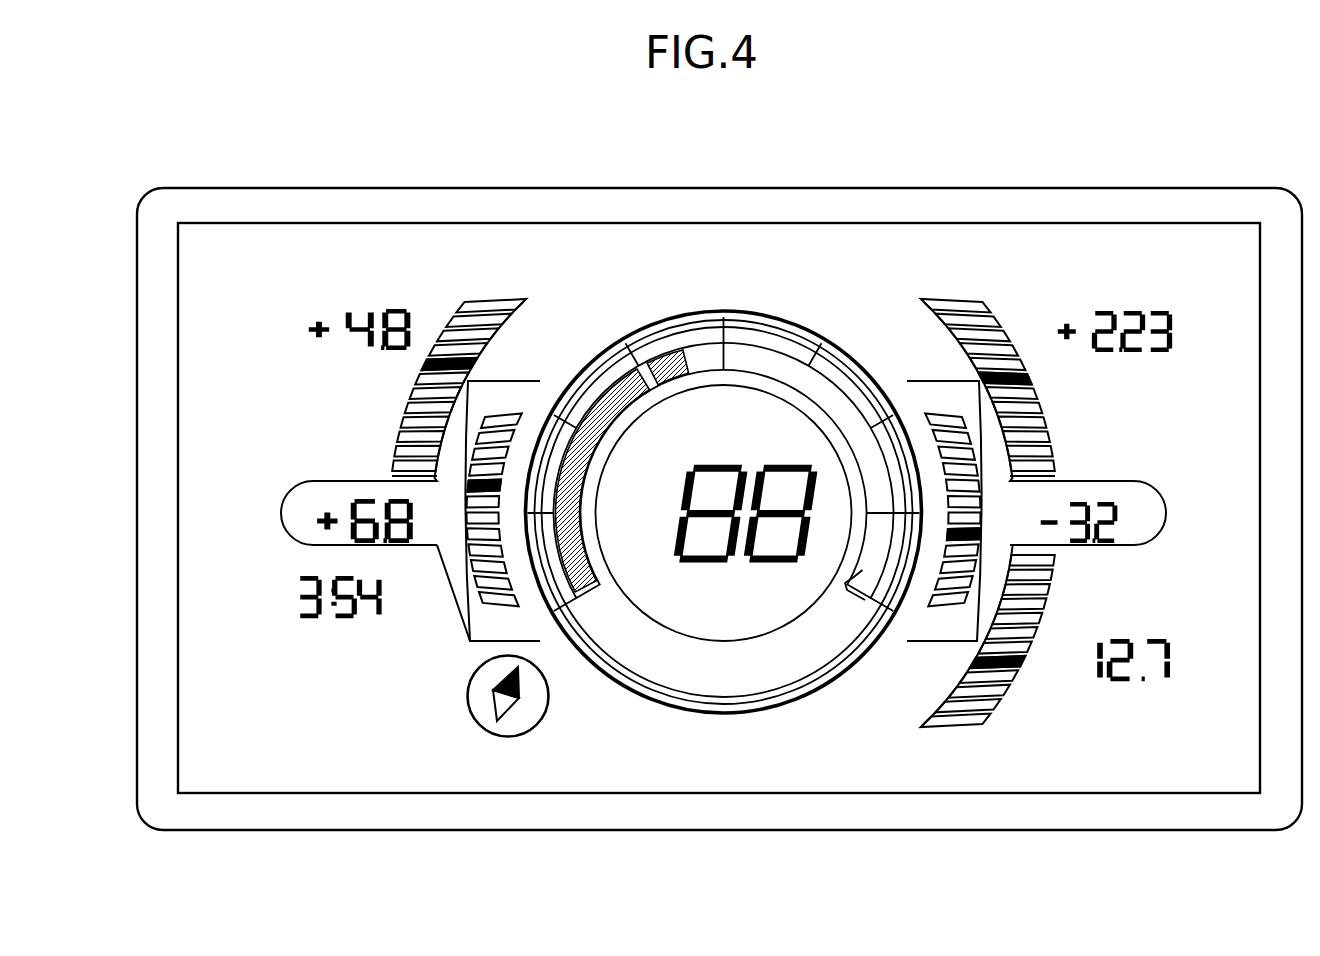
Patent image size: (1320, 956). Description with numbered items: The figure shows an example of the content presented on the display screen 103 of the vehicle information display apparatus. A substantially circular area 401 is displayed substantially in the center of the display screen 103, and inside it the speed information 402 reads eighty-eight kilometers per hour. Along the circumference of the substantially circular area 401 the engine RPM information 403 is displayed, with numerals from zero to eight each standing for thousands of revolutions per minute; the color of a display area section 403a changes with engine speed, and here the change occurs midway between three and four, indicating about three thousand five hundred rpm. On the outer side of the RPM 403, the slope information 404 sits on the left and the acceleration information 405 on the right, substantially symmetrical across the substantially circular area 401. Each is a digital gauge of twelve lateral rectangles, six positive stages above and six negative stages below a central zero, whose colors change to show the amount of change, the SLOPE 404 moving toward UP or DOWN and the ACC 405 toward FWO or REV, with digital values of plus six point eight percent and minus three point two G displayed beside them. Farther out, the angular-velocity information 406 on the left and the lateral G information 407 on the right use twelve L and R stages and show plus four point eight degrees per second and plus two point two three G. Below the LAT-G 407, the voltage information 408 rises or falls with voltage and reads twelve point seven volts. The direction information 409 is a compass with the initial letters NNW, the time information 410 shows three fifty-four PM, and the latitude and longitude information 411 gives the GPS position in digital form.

The display screen 103 is at (966, 162).
The substantially circular area 401 is at (757, 408).
The speed information 402 is at (677, 570).
The engine RPM information 403 is at (668, 352).
The display area section 403a is at (587, 588).
The slope information 404 is at (472, 567).
The acceleration information 405 is at (913, 641).
The angular-velocity information 406 is at (478, 302).
The lateral G information 407 is at (960, 302).
The voltage information 408 is at (1000, 700).
The direction information 409 is at (507, 728).
The time information 410 is at (297, 598).
The latitude and longitude information 411 is at (276, 679).